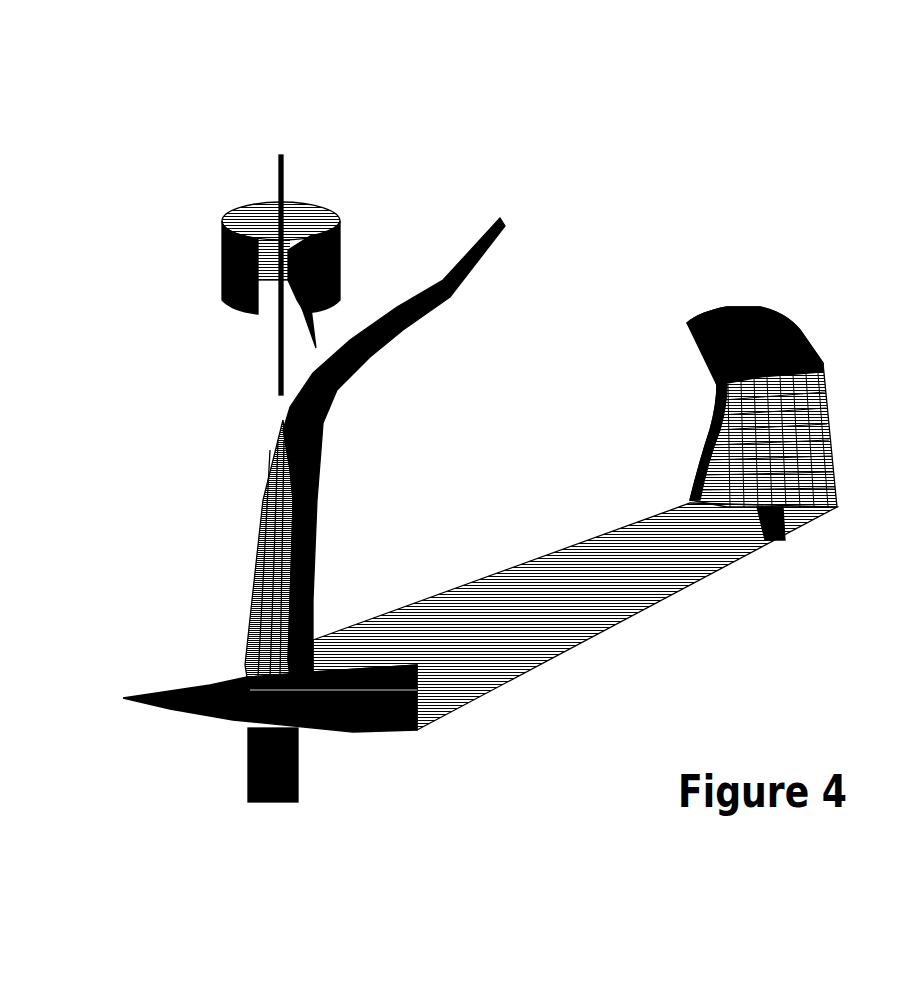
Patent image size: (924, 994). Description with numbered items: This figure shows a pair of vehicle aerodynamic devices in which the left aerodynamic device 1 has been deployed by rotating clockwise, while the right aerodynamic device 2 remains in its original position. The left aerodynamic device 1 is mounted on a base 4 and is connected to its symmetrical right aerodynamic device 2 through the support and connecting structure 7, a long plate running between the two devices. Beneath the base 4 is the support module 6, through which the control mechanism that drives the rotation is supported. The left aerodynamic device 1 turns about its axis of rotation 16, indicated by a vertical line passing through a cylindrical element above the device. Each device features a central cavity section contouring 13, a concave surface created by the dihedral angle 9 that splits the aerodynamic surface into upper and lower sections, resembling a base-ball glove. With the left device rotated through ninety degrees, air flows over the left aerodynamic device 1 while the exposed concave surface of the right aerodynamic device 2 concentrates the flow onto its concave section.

The left aerodynamic device 1 is at (494, 216).
The right aerodynamic device 2 is at (733, 303).
The base of the aerodynamic device 4 is at (380, 703).
The support module of the control mechanism 6 is at (277, 760).
The support and connecting structure 7 is at (573, 600).
The dihedral angle 9 is at (407, 333).
The central cavity section contouring 13 is at (173, 528).
The axis of rotation of the left aerodynamic device 16 is at (281, 155).